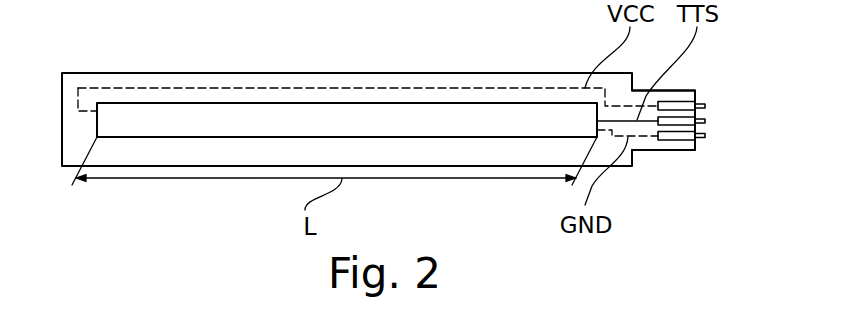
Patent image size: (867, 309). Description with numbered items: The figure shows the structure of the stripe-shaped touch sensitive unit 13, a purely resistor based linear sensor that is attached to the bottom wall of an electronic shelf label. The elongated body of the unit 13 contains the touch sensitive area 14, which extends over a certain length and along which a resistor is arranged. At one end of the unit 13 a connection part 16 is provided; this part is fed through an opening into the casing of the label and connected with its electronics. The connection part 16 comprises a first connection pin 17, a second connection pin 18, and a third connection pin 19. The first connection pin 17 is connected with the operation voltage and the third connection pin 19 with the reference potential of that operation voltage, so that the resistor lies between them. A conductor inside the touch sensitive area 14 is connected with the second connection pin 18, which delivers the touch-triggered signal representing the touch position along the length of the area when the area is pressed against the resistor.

The stripe-shaped touch sensitive unit 13 is at (440, 73).
The touch sensitive area 14 is at (174, 118).
The connection part 16 is at (657, 151).
The first connection pin 17 is at (703, 105).
The second connection pin 18 is at (705, 121).
The third connection pin 19 is at (705, 136).